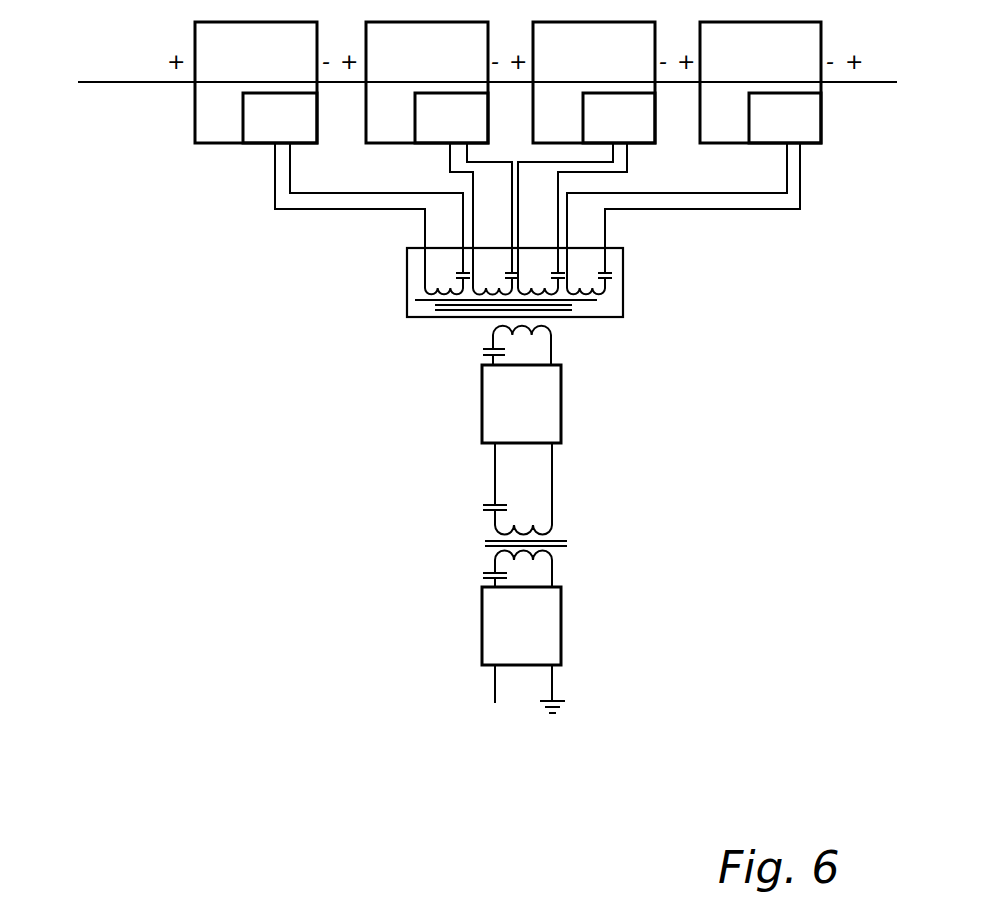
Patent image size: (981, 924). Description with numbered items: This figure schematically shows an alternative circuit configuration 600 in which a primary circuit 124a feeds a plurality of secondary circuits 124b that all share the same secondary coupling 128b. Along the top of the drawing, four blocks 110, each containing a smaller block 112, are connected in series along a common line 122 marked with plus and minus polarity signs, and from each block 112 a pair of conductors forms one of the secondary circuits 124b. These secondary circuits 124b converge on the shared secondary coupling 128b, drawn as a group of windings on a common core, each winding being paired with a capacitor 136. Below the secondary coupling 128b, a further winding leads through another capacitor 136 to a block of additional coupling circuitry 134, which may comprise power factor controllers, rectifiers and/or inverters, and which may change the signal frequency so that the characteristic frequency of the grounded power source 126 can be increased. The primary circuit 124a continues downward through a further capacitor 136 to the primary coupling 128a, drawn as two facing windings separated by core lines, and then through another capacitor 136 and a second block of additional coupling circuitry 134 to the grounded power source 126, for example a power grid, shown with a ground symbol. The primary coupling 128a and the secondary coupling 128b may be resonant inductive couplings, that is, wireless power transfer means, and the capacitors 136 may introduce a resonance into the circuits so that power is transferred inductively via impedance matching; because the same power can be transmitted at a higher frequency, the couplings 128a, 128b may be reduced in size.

The bus line 122 is at (122, 82).
The battery module 110 is at (508, 82).
The module controller / converter 112 is at (532, 118).
The secondary circuit 124b is at (832, 199).
The capacitor 136 is at (512, 272).
The secondary coupling 128b is at (623, 276).
The additional coupling circuitry 134 is at (521, 515).
The primary circuit 124a is at (552, 470).
The primary coupling 128a is at (575, 541).
The grounded power source 126 is at (552, 675).
The alternative circuit configuration 600 is at (166, 380).